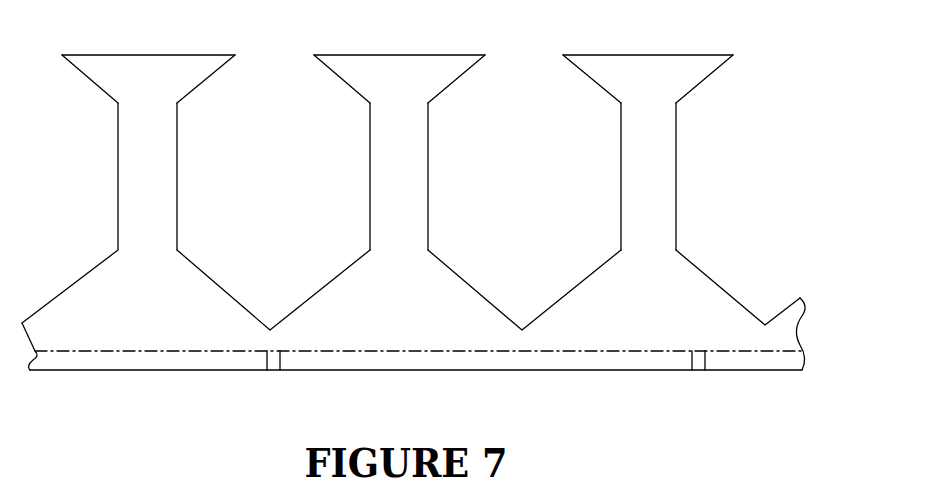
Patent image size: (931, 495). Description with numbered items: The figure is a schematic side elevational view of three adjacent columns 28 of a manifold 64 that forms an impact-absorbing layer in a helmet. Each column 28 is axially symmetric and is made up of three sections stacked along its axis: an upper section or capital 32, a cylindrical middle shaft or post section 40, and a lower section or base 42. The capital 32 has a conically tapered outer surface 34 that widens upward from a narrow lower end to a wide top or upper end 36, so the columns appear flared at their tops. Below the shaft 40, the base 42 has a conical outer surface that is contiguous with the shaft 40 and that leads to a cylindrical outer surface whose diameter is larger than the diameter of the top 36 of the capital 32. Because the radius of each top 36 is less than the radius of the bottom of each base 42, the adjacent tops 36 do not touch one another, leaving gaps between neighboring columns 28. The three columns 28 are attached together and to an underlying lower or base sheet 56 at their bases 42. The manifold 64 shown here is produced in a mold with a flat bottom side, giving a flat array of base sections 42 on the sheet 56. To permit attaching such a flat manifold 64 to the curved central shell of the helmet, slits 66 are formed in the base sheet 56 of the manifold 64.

The column 28 is at (607, 158).
The upper section or capital 32 is at (206, 83).
The conically tapered outer surface 34 is at (590, 83).
The top or upper end 36 is at (210, 55).
The middle shaft or post section 40 is at (371, 173).
The lower section or base 42 is at (592, 262).
The lower or base sheet 56 is at (537, 360).
The manifold 64 is at (701, 178).
The slits 66 is at (288, 348).